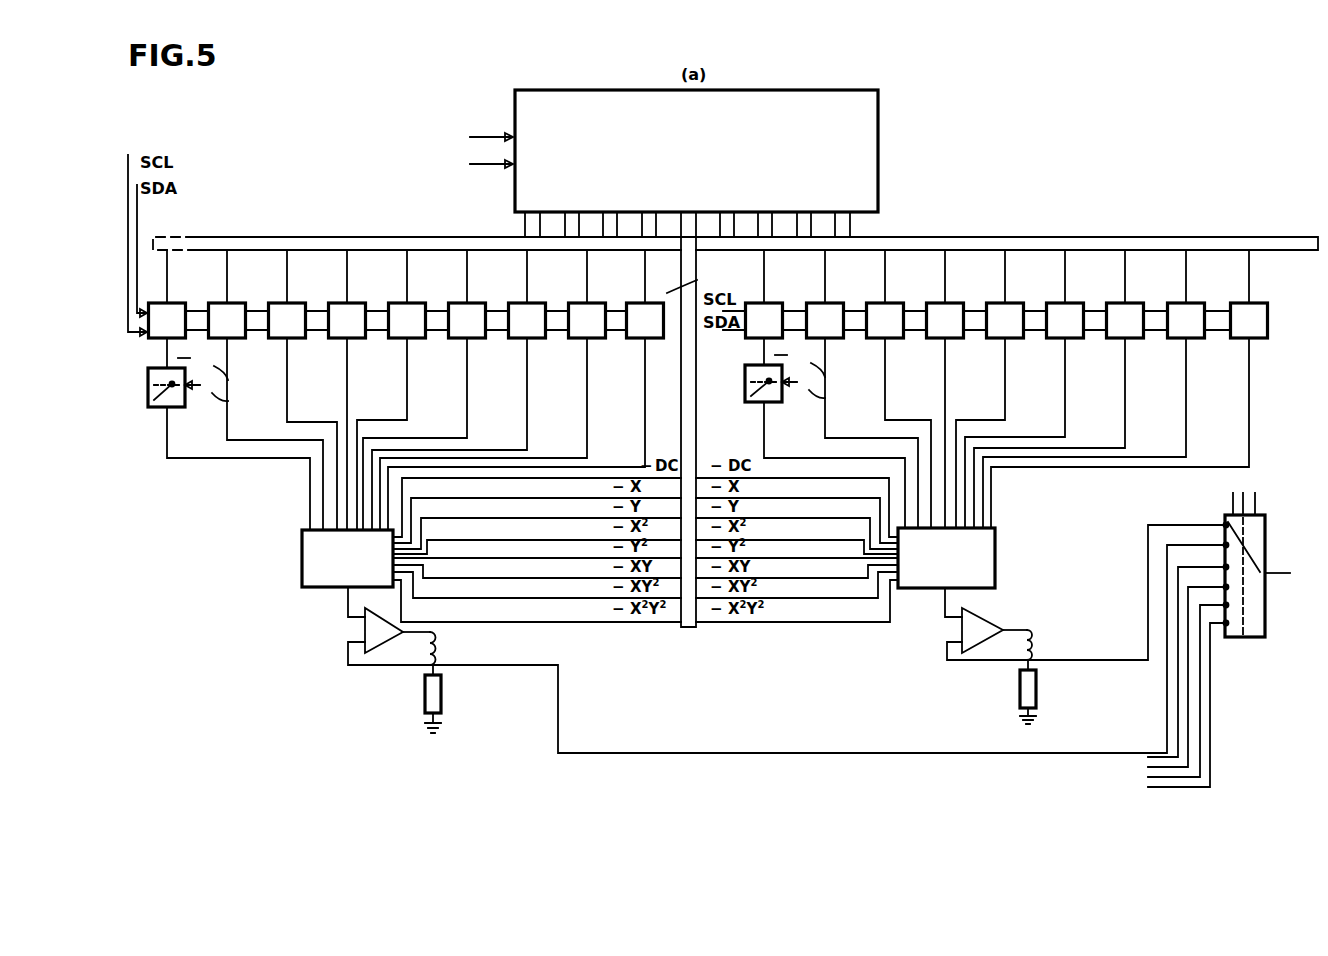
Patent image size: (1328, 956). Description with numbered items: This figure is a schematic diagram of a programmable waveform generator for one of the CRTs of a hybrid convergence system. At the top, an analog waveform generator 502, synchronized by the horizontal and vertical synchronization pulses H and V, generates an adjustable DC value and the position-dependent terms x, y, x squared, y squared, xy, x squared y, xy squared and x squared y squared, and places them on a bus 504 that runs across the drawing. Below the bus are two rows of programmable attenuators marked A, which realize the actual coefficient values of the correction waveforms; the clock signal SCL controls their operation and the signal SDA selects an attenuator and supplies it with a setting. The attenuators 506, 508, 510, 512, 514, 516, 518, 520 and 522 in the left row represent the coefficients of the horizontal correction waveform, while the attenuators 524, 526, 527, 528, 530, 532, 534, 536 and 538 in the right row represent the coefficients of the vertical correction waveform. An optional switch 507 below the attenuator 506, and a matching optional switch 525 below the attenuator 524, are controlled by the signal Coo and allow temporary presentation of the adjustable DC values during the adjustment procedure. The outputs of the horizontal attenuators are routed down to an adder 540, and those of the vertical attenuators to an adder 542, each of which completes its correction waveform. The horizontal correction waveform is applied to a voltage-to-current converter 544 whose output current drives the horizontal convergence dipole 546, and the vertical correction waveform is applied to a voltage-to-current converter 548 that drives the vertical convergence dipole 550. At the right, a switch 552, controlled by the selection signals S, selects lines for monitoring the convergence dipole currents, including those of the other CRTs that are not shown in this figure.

The analog waveform generator 502 is at (880, 138).
The bus 504 is at (1012, 236).
The attenuator 506 is at (160, 343).
The switch 507 is at (178, 408).
The attenuator 508 is at (232, 341).
The attenuator 510 is at (295, 341).
The attenuator 512 is at (355, 341).
The attenuator 514 is at (413, 341).
The attenuator 516 is at (475, 341).
The attenuator 518 is at (535, 341).
The attenuator 520 is at (593, 341).
The attenuator 522 is at (640, 342).
The attenuator 524 is at (750, 343).
The switch 525 is at (750, 404).
The attenuator 526 is at (832, 341).
The attenuator 527 is at (892, 341).
The attenuator 528 is at (953, 341).
The attenuator 530 is at (1015, 341).
The attenuator 532 is at (1075, 341).
The attenuator 534 is at (1135, 341).
The attenuator 536 is at (1195, 341).
The attenuator 538 is at (1257, 341).
The adder 540 is at (302, 551).
The adder 542 is at (990, 562).
The voltage-to-current converter 544 is at (376, 647).
The horizontal convergence dipole 546 is at (440, 657).
The voltage-to-current converter 548 is at (985, 623).
The vertical convergence dipole 550 is at (1032, 641).
The switch 552 is at (1238, 640).